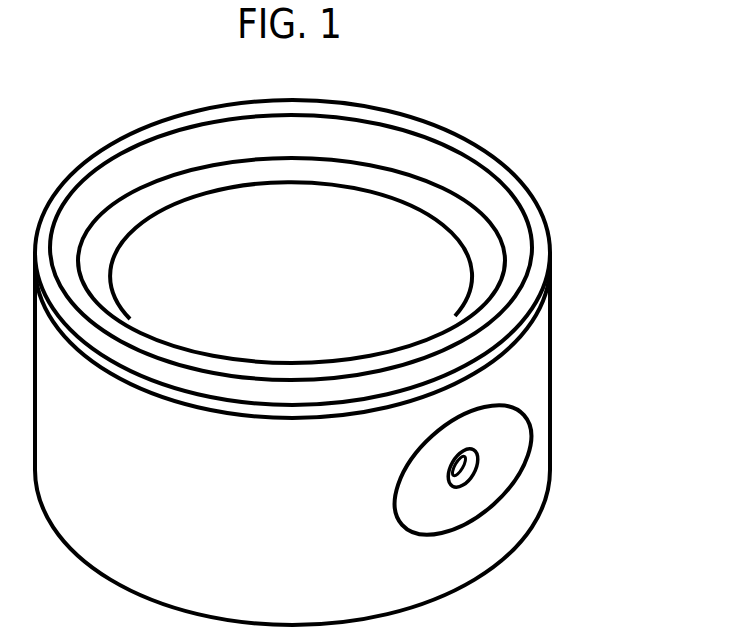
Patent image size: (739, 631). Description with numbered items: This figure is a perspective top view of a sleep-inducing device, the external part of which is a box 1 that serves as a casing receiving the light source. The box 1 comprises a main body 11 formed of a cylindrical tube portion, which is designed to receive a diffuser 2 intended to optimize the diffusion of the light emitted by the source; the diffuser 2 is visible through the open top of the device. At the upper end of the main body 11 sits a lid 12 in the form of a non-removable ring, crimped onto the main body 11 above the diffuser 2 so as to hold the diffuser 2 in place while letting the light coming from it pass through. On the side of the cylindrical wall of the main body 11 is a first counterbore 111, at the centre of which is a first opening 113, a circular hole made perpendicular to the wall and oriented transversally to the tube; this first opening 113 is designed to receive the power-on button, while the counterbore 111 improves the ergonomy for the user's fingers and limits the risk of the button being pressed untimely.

The box 1 is at (566, 248).
The diffuser 2 is at (332, 272).
The main body 11 is at (528, 385).
The lid 12 is at (493, 190).
The first counterbore 111 is at (497, 464).
The first opening 113 is at (472, 472).